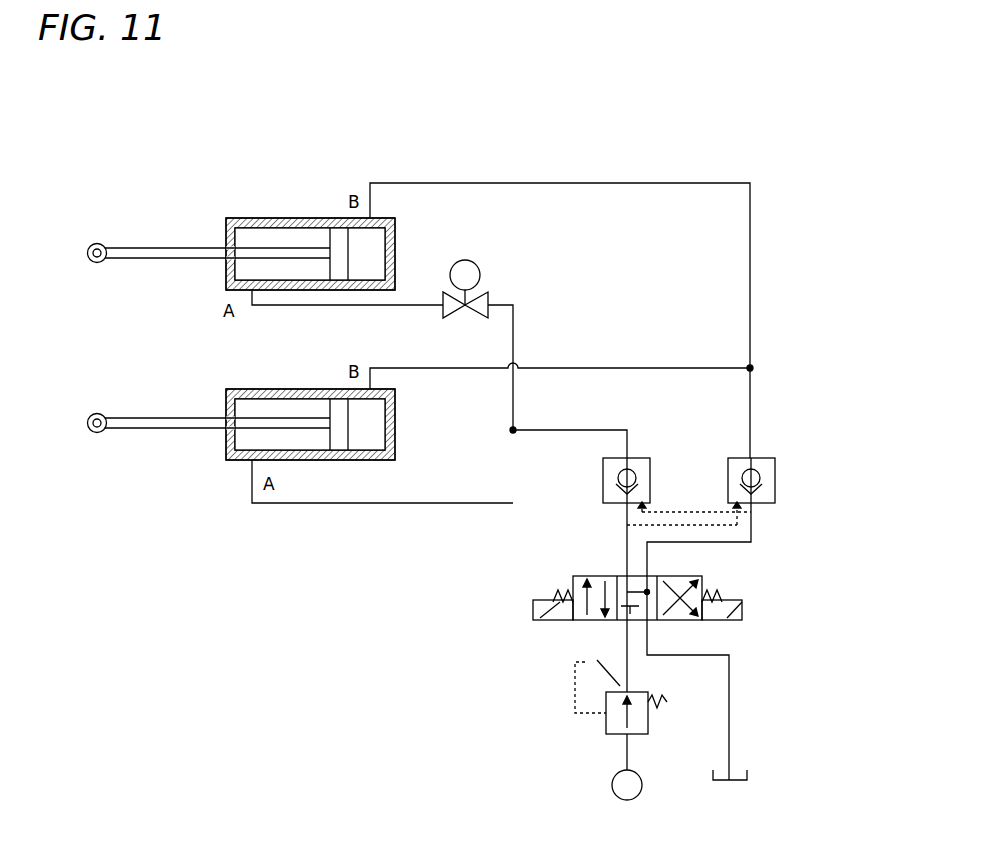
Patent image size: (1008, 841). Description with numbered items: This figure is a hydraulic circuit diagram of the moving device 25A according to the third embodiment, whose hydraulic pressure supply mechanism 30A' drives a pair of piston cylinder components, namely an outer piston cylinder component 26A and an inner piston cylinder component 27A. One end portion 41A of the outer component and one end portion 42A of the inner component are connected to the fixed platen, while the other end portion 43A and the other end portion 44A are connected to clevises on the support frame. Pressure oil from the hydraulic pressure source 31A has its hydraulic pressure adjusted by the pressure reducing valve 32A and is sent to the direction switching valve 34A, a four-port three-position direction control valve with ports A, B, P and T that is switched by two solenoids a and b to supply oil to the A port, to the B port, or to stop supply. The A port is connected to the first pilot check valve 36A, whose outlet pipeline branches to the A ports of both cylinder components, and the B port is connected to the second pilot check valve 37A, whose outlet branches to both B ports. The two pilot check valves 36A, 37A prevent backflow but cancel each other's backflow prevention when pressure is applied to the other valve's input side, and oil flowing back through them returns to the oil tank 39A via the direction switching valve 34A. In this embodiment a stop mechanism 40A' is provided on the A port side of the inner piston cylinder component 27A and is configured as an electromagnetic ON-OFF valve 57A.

The moving device 25A is at (776, 164).
The hydraulic pressure supply mechanism 30A' is at (712, 133).
The inner piston cylinder component 27A is at (250, 218).
The outer piston cylinder component 26A is at (226, 445).
The one end portion 42A is at (98, 243).
The one end portion 41A is at (97, 436).
The other end portion 44A is at (395, 241).
The other end portion 43A is at (395, 421).
The stop mechanism 40A' is at (517, 304).
The electromagnetic ON-OFF valve 57A is at (478, 266).
The first pilot check valve 36A is at (603, 488).
The second pilot check valve 37A is at (775, 476).
The direction switching valve 34A is at (742, 608).
The pressure reducing valve 32A is at (606, 703).
The hydraulic pressure source 31A is at (612, 784).
The oil tank 39A is at (737, 772).